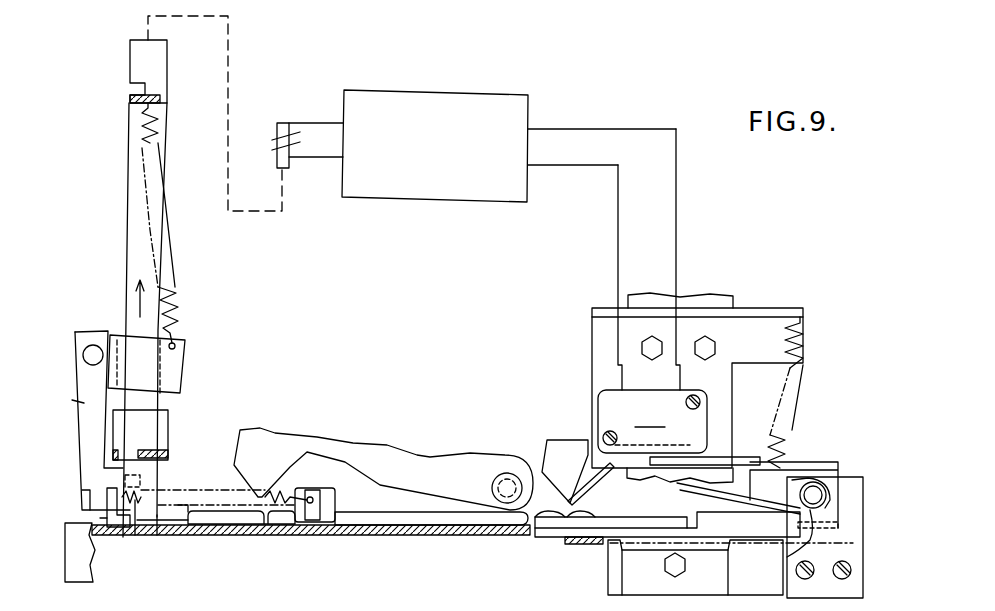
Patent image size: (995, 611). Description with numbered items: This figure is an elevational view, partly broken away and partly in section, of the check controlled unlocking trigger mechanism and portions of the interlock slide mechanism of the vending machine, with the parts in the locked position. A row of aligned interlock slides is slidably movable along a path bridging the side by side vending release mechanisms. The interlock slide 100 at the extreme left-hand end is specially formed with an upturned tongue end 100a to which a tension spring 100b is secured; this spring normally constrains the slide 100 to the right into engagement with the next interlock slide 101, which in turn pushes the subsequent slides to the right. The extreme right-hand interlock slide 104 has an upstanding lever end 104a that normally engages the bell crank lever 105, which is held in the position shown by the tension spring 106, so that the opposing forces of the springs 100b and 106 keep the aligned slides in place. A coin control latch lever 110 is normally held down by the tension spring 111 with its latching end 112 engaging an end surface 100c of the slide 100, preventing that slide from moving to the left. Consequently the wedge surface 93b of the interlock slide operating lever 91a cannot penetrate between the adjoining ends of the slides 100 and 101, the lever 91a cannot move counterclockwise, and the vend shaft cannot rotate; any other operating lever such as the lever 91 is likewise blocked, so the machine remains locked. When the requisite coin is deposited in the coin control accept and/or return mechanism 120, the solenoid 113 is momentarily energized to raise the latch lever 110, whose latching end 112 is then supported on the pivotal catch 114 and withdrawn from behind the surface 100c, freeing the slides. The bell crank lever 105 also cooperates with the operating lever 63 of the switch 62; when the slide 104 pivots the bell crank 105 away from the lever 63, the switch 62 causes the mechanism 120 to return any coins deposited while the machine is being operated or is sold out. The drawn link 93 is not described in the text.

The coin control latch lever 110 is at (128, 222).
The tension spring 111 is at (178, 318).
The solenoid 113 is at (282, 123).
The pivotal catch 114 is at (92, 332).
The coin control accept and/or return mechanism 120 is at (505, 92).
The latching end 112 is at (127, 533).
The interlock slide 100 is at (233, 513).
The upturned tongue end 100a is at (103, 530).
The tension spring 100b is at (175, 505).
The end surface 100c is at (155, 487).
The interlock slide 101 is at (405, 513).
The wedge surface 93b is at (288, 465).
The interlock slide operating lever 91a is at (427, 462).
The interlock slide operating lever 91 is at (567, 440).
The link 93 is at (580, 488).
The switch 62 is at (697, 298).
The operating lever 63 is at (750, 457).
The tension spring 106 is at (797, 398).
The bell crank lever 105 is at (840, 478).
The interlock slide 104 is at (592, 520).
The upstanding lever end 104a is at (755, 522).